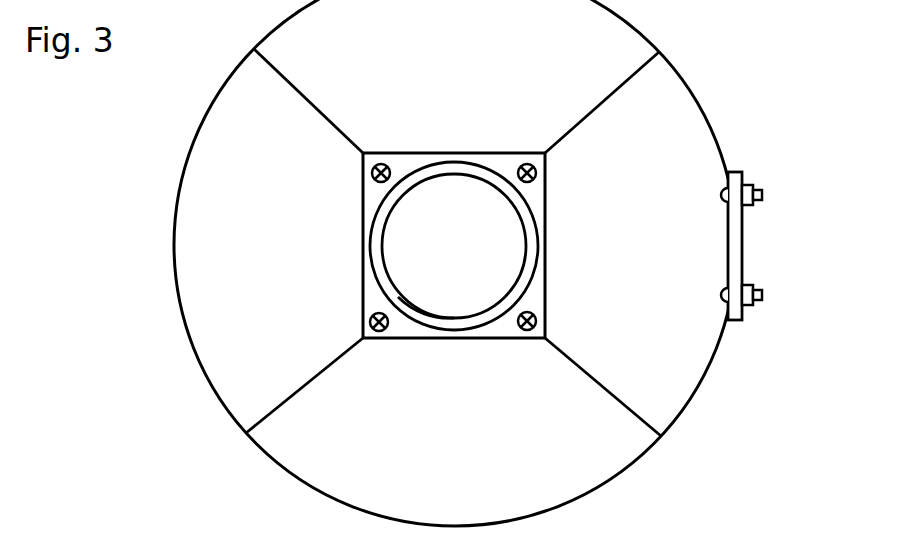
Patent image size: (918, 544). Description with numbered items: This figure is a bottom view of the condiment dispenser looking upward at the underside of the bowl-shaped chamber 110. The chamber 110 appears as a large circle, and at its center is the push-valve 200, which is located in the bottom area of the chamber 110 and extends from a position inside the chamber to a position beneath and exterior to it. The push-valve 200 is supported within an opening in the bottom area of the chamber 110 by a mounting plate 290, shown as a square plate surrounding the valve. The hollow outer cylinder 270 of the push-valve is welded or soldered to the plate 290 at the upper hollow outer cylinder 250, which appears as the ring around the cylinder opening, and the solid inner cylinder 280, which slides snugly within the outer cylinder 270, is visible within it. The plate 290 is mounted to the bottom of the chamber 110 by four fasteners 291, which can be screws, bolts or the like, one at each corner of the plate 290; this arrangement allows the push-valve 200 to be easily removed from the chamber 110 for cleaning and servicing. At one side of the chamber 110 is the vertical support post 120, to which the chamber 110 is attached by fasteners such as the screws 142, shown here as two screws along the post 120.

The chamber 110 is at (505, 450).
The vertical support post 120 is at (742, 243).
The screws 142 is at (752, 185).
The push-valve 200 is at (476, 255).
The upper hollow outer cylinder 250 is at (482, 160).
The hollow outer cylinder 270 is at (527, 240).
The solid inner cylinder 280 is at (423, 313).
The mounting plate 290 is at (545, 192).
The fasteners 291 is at (385, 162).